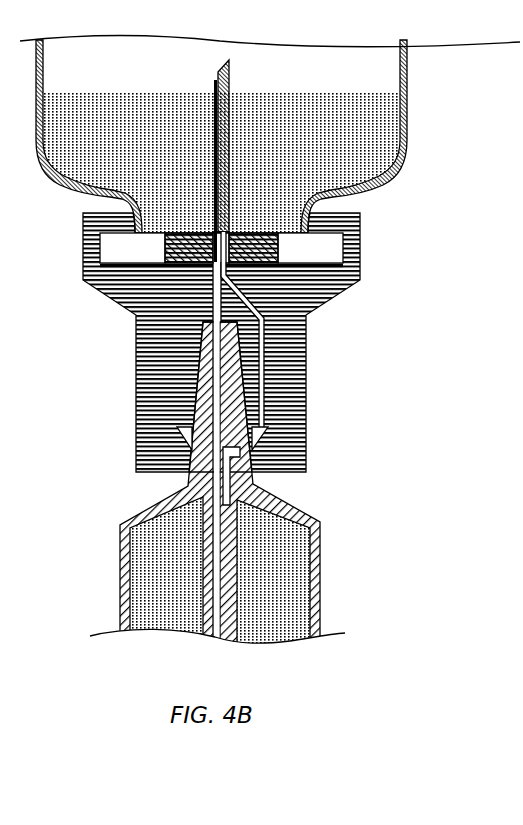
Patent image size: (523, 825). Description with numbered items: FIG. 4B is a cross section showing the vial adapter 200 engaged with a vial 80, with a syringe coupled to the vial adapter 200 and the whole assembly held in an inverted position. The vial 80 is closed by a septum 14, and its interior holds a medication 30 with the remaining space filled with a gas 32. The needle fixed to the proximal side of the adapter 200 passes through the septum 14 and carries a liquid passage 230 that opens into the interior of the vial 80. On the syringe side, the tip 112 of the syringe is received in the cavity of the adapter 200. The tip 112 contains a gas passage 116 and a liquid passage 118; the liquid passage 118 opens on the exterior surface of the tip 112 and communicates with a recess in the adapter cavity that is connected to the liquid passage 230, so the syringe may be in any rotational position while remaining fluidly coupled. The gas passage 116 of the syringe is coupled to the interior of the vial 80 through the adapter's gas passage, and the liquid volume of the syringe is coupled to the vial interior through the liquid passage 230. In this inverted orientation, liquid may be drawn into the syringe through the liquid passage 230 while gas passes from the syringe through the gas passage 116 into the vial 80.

The septum 14 is at (196, 247).
The powdered medication 30 is at (369, 138).
The gas 32 is at (149, 76).
The vial 80 is at (372, 203).
The tip 112 is at (197, 482).
The gas passage 116 is at (216, 528).
The liquid passage 118 is at (343, 571).
The vial adapter 200 is at (207, 414).
The liquid passage 230 is at (241, 217).